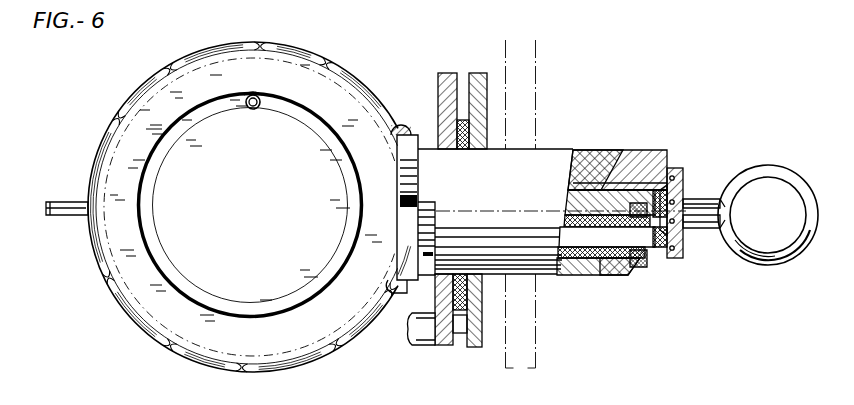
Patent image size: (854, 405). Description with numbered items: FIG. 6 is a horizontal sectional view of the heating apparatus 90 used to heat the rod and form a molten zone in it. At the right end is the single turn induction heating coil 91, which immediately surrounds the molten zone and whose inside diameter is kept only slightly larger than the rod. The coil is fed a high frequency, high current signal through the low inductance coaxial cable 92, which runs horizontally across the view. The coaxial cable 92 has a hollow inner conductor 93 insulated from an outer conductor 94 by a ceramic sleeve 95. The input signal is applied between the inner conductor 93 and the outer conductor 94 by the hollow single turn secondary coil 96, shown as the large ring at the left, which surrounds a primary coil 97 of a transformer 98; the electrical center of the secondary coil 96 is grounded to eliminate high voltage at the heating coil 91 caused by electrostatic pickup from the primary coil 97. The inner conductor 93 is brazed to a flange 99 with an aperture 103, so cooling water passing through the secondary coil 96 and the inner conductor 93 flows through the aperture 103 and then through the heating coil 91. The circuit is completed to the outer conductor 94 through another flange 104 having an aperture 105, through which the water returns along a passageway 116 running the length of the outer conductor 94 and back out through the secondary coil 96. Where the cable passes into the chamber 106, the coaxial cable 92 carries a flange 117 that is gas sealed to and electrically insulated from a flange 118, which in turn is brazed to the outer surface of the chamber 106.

The heating apparatus 90 is at (558, 112).
The single turn induction heating coil 91 is at (772, 166).
The low inductance coaxial cable 92 is at (634, 277).
The hollow inner conductor 93 is at (567, 268).
The outer conductor 94 is at (642, 156).
The ceramic sleeve 95 is at (594, 276).
The single turn secondary coil 96 is at (108, 232).
The primary coil 97 is at (263, 111).
The transformer 98 is at (91, 134).
The flange 99 is at (668, 259).
The aperture 103 is at (684, 232).
The flange 104 is at (674, 170).
The aperture 105 is at (686, 200).
The chamber 106 is at (516, 357).
The passageway 116 is at (598, 192).
The flange 117 is at (440, 346).
The flange 118 is at (475, 348).